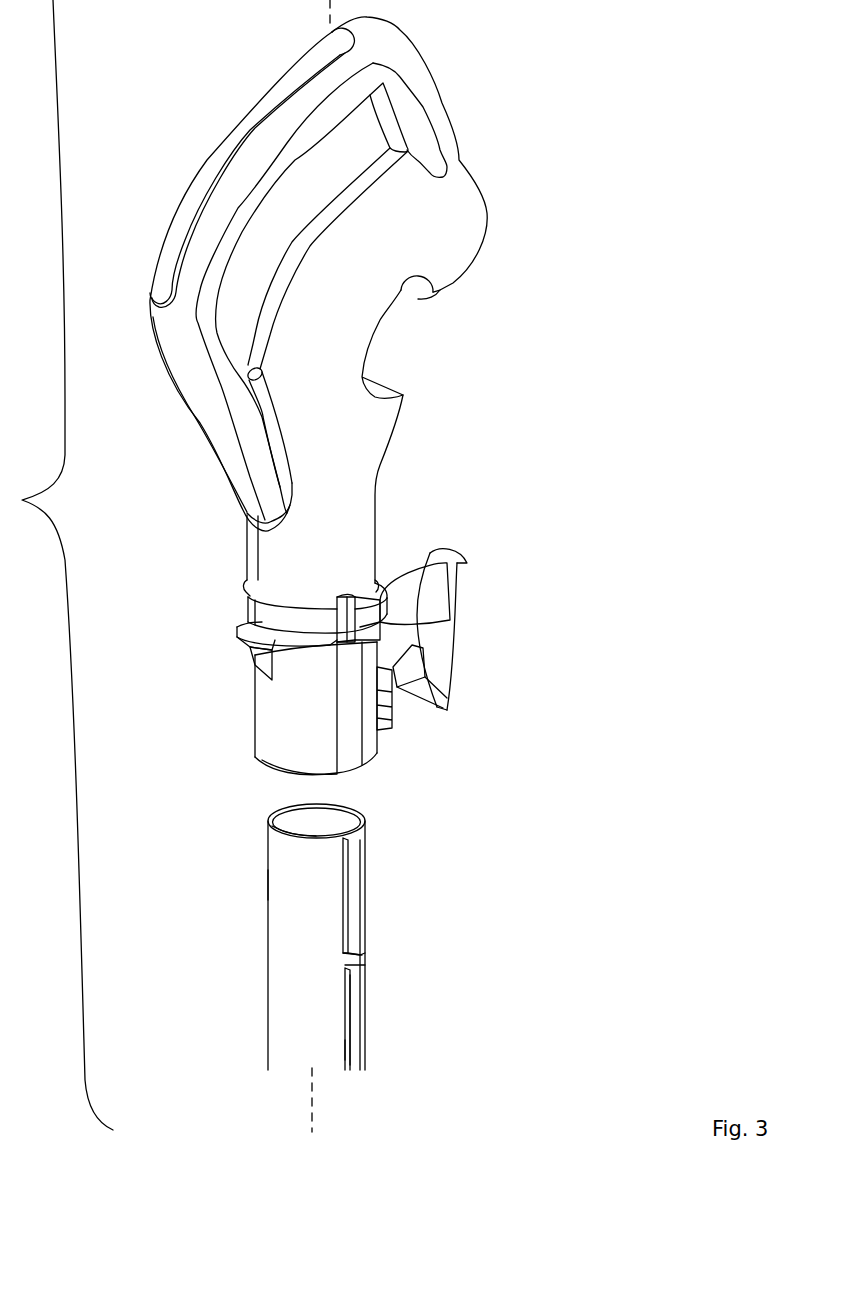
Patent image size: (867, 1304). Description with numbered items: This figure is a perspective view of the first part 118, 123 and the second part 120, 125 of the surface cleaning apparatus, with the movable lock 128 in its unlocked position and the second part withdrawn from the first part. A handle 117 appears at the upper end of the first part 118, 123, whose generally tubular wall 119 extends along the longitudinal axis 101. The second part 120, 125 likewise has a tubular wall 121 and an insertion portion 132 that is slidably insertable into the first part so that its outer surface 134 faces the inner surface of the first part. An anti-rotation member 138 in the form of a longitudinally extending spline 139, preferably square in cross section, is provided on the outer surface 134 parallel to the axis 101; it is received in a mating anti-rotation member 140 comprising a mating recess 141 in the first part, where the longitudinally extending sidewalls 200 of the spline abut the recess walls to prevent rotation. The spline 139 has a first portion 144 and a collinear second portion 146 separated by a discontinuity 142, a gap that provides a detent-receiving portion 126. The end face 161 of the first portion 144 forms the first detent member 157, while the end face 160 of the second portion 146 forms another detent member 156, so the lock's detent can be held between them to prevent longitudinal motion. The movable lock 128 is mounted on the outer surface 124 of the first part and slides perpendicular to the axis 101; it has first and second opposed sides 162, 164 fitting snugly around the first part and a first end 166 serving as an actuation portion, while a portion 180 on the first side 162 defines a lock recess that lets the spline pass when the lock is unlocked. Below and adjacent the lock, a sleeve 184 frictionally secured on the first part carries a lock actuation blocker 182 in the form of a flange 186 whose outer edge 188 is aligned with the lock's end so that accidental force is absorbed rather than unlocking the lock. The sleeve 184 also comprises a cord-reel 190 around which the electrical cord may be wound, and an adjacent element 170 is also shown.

The handle 117 is at (390, 42).
The first part 118 is at (251, 555).
The upper end of pole 123 is at (245, 590).
The mating anti-rotation member 140 is at (338, 567).
The mating recess 141 is at (340, 607).
The outer surface 124 is at (379, 592).
The movable lock 128 is at (290, 607).
The second opposed side 164 is at (263, 623).
The outer edge 188 is at (240, 637).
The flange 186 is at (250, 648).
The portion 180 is at (281, 708).
The wall 119 is at (340, 652).
The sleeve 184 is at (323, 760).
The first opposed end 166 is at (400, 596).
The first opposed side 162 is at (360, 627).
The lever 170 is at (457, 565).
The cord-reel 190 is at (447, 692).
The lock actuation blocker 182 is at (378, 756).
The second part 120 is at (226, 937).
The pole section 125 is at (226, 937).
The wall 121 is at (272, 1040).
The insertion portion 132 is at (366, 831).
The longitudinally extending sidewalls 200 is at (340, 847).
The outer surface 134 is at (290, 886).
The first portion 144 is at (352, 853).
The first detent member 157 is at (436, 929).
The end face 161 is at (363, 955).
The end face 160 is at (252, 961).
The detent member 156 is at (347, 964).
The detent-receiving portion 126 is at (455, 1009).
The discontinuity 142 is at (350, 962).
The second portion 146 is at (350, 994).
The anti-rotation member 138 is at (455, 1051).
The spline 139 is at (348, 1048).
The longitudinal axis 101 is at (313, 1103).